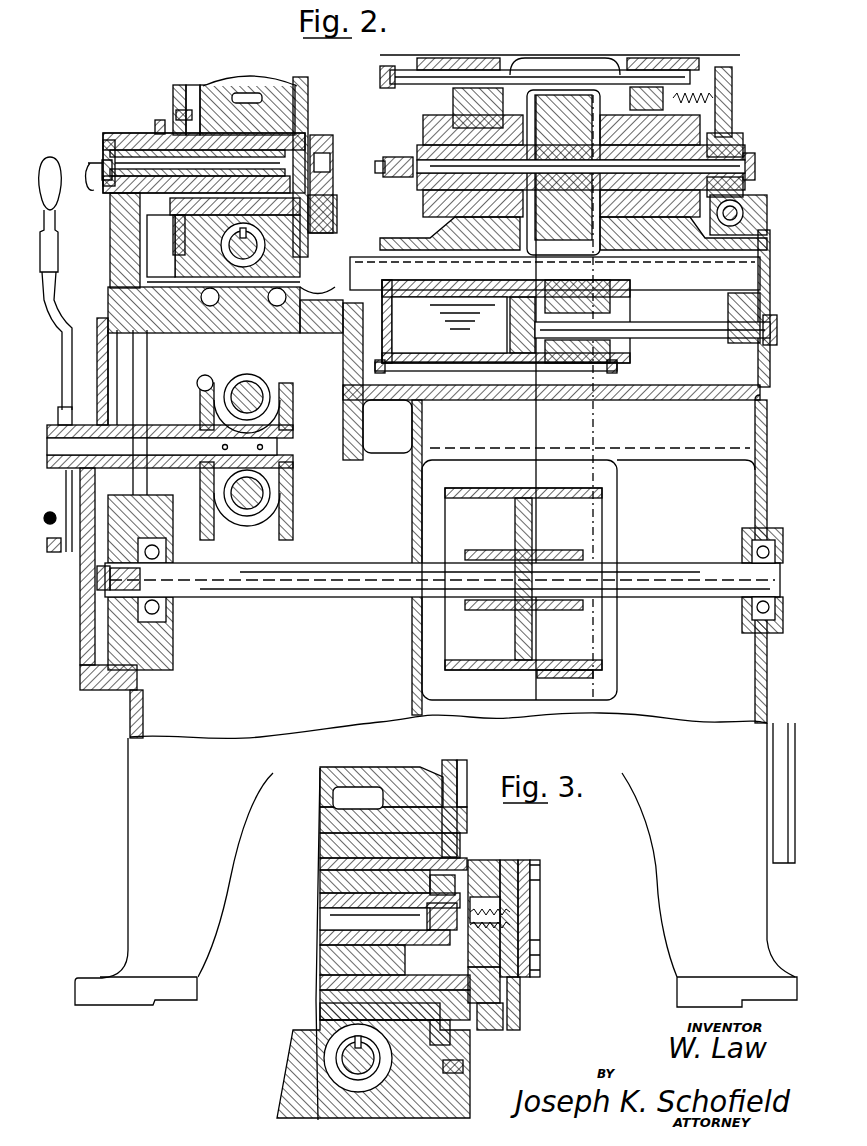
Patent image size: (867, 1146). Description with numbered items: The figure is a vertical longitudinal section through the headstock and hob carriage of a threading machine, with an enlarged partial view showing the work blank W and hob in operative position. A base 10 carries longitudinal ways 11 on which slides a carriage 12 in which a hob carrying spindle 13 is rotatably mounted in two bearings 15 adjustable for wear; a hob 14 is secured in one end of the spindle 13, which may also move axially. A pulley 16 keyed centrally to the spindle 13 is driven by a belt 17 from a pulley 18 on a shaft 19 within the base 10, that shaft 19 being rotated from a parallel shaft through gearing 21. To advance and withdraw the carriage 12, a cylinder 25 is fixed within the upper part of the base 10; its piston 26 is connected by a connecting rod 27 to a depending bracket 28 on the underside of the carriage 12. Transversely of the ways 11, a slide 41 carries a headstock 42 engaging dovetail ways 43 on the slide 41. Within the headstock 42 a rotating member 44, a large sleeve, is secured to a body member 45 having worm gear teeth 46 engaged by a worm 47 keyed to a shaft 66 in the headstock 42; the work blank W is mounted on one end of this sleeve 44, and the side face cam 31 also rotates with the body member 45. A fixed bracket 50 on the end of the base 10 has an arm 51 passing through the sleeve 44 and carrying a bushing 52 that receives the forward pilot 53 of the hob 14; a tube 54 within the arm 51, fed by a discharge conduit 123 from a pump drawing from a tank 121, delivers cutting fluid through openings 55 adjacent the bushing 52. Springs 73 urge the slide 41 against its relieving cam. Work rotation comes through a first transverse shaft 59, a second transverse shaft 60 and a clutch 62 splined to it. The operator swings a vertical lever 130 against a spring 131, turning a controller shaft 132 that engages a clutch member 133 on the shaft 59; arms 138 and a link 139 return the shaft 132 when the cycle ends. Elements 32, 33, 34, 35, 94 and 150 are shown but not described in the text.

In FIG. 2, the base 10 is at (128, 735).
In FIG. 2, the ways 11 is at (381, 260).
In FIG. 2, the carriage 12 is at (470, 90).
In FIG. 3, the carriage 12 is at (533, 920).
In FIG. 2, the hob carrying spindle 13 is at (420, 195).
In FIG. 3, the hob carrying spindle 13 is at (530, 910).
In FIG. 2, the hob 14 is at (396, 155).
In FIG. 3, the hob 14 is at (510, 880).
In FIG. 2, the bearings 15 is at (445, 227).
In FIG. 2, the pulley 16 is at (565, 110).
In FIG. 2, the belt 17 is at (585, 475).
In FIG. 2, the pulley 18 is at (478, 658).
In FIG. 2, the shaft 19 is at (679, 582).
In FIG. 2, the gearing 21 is at (145, 668).
In FIG. 2, the cylinder 25 is at (488, 295).
In FIG. 2, the piston 26 is at (537, 360).
In FIG. 2, the connecting rod 27 is at (681, 338).
In FIG. 2, the depending bracket 28 is at (729, 310).
In FIG. 2, the side face cam 31 is at (301, 80).
In FIG. 3, the side face cam 31 is at (461, 763).
In FIG. 2, the bolt 32 is at (383, 76).
In FIG. 2, the rod 33 is at (645, 77).
In FIG. 2, the arm 34 is at (728, 122).
In FIG. 2, the boss 35 is at (743, 214).
In FIG. 2, the slide 41 is at (233, 292).
In FIG. 2, the headstock 42 is at (288, 266).
In FIG. 3, the headstock 42 is at (300, 1090).
In FIG. 2, the dovetail ways 43 is at (180, 290).
In FIG. 2, the rotating member 44 is at (157, 128).
In FIG. 3, the rotating member 44 is at (320, 865).
In FIG. 2, the body member 45 is at (206, 112).
In FIG. 3, the body member 45 is at (320, 838).
In FIG. 2, the worm gear teeth 46 is at (243, 93).
In FIG. 3, the worm gear teeth 46 is at (360, 800).
In FIG. 2, the worm 47 is at (246, 252).
In FIG. 3, the worm 47 is at (420, 1080).
In FIG. 2, the fixed bracket 50 is at (128, 240).
In FIG. 2, the arm 51 is at (118, 150).
In FIG. 3, the arm 51 is at (320, 886).
In FIG. 3, the bushing 52 is at (445, 893).
In FIG. 2, the forward pilot 53 is at (384, 176).
In FIG. 2, the sleeve or tube 54 is at (105, 152).
In FIG. 3, the sleeve or tube 54 is at (320, 904).
In FIG. 3, the openings 55 is at (515, 972).
In FIG. 2, the transverse shaft 59 is at (234, 500).
In FIG. 2, the second transverse shaft 60 is at (222, 383).
In FIG. 2, the clutch 62 is at (272, 385).
In FIG. 2, the shaft 66 is at (243, 240).
In FIG. 3, the shaft 66 is at (340, 1055).
In FIG. 2, the springs 73 is at (297, 292).
In FIG. 2, the nut 94 is at (190, 90).
In FIG. 2, the second tank 121 is at (763, 432).
In FIG. 2, the discharge conduit 123 is at (92, 195).
In FIG. 2, the vertical lever 130 is at (62, 385).
In FIG. 2, the spring 131 is at (45, 518).
In FIG. 2, the controller shaft 132 is at (280, 447).
In FIG. 2, the clutch member 133 is at (267, 505).
In FIG. 2, the arms 138 is at (65, 500).
In FIG. 2, the link 139 is at (50, 553).
In FIG. 2, the set screw 150 is at (178, 110).
In FIG. 2, the work blank W is at (321, 140).
In FIG. 3, the work blank W is at (485, 860).